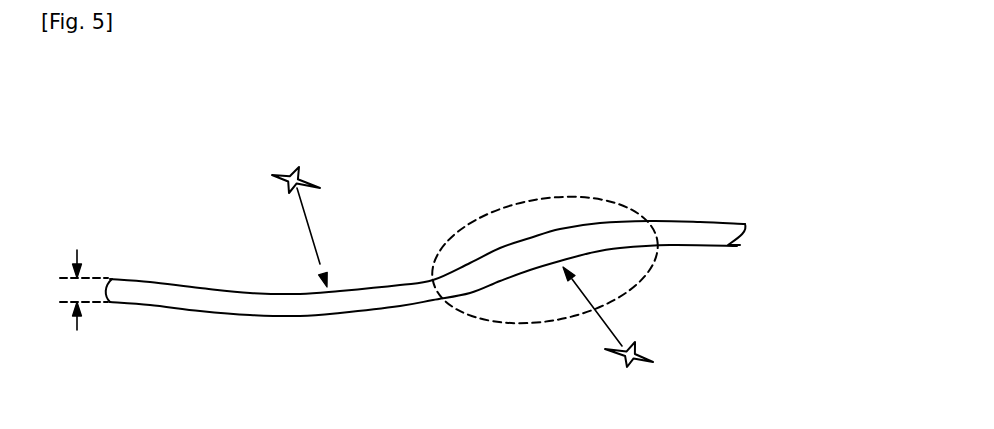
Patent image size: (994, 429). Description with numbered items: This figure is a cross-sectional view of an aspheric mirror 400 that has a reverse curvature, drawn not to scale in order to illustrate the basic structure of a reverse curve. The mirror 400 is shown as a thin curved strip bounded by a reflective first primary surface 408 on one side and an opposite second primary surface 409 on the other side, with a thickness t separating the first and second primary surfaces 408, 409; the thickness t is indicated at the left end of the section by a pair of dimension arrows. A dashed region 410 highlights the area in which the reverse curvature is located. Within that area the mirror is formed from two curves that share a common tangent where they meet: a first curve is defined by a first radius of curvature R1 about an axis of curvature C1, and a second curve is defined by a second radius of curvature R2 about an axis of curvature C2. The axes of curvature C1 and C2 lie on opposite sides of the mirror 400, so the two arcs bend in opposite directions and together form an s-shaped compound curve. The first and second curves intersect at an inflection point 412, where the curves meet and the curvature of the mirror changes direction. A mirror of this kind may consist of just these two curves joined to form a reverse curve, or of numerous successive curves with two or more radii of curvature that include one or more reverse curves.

The aspheric mirror 400 is at (426, 218).
The first primary surface 408 is at (183, 285).
The second primary surface 409 is at (183, 313).
The region 410 is at (575, 200).
The inflection point 412 is at (519, 306).
The thickness t is at (81, 290).
The axis of curvature C1 is at (296, 167).
The first radius of curvature R1 is at (321, 237).
The axis of curvature C2 is at (630, 370).
The second radius of curvature R2 is at (592, 306).